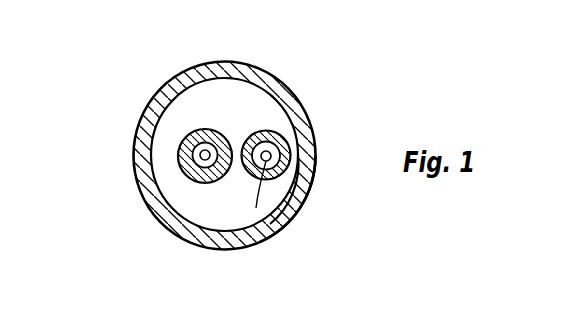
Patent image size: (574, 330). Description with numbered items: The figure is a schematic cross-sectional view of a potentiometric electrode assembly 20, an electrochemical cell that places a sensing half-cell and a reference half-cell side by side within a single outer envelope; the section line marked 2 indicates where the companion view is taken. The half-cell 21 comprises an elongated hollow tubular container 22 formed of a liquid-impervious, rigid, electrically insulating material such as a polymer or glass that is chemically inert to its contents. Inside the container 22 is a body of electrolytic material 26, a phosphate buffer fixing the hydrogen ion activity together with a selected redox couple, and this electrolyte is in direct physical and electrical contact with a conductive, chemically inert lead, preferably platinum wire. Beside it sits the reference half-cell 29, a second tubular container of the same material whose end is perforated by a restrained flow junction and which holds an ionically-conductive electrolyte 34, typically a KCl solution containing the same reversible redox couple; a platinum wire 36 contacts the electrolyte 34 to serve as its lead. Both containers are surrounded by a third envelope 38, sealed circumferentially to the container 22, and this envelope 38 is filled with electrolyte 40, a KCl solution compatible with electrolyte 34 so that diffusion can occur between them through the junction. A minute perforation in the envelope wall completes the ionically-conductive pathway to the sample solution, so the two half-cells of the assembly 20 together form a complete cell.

The potentiometric electrode assembly 20 is at (300, 42).
The third envelope 38 is at (174, 80).
The electrolyte 40 is at (175, 118).
The elongated hollow tubular container 22 is at (178, 147).
The half-cell 21 is at (182, 172).
The electrolytic material 26 is at (204, 161).
The half-cell 29 is at (270, 131).
The electrolyte 34 is at (304, 190).
The platinum wire 36 is at (281, 226).
The section line 2- 2 is at (90, 129).